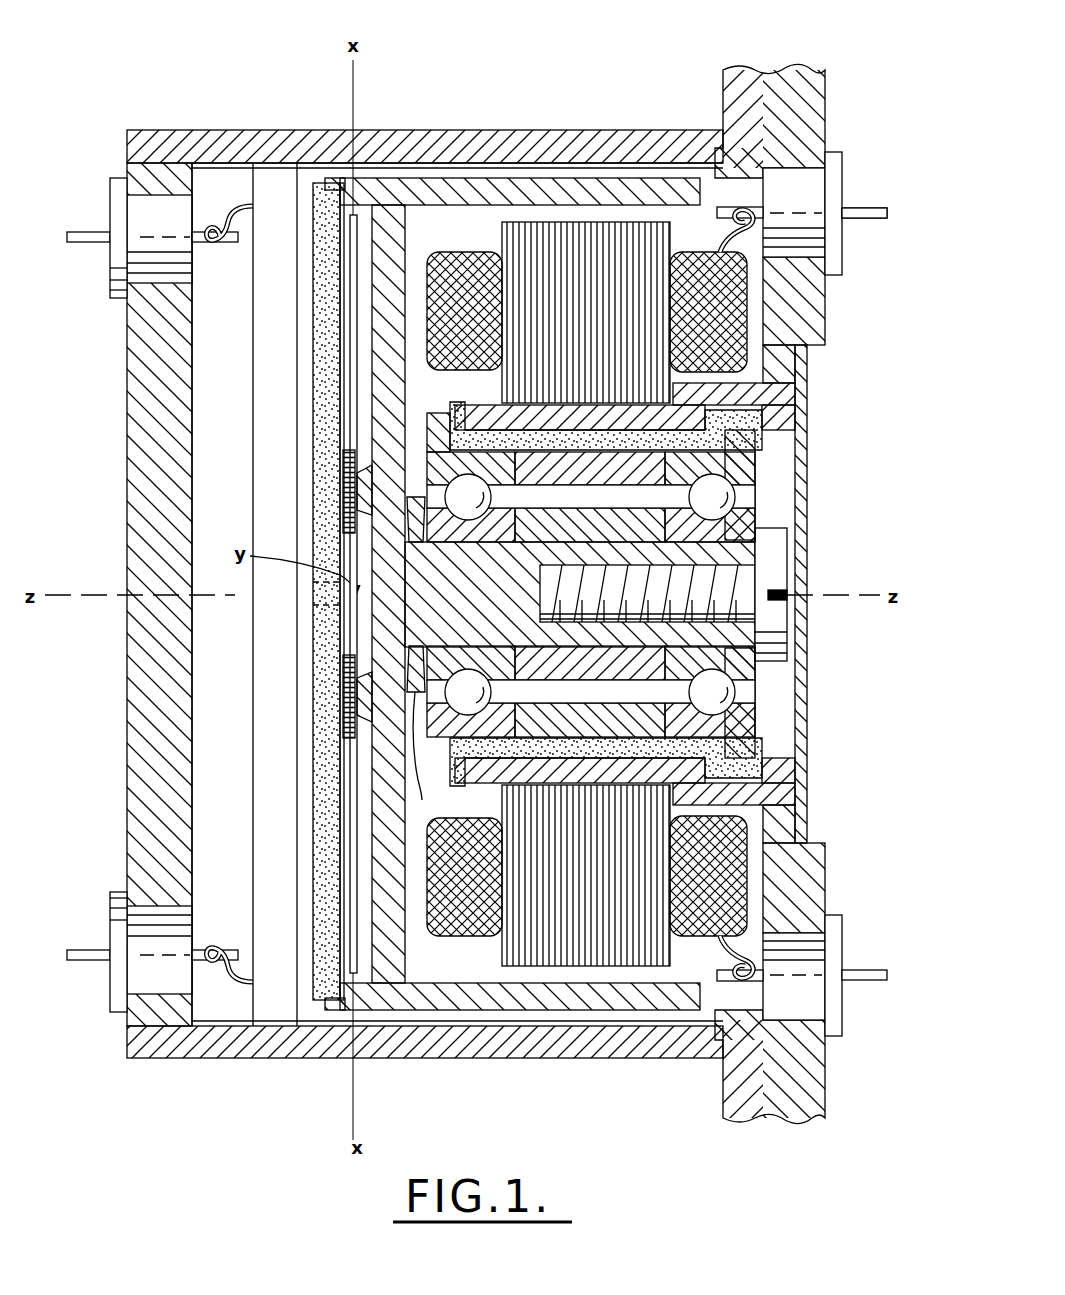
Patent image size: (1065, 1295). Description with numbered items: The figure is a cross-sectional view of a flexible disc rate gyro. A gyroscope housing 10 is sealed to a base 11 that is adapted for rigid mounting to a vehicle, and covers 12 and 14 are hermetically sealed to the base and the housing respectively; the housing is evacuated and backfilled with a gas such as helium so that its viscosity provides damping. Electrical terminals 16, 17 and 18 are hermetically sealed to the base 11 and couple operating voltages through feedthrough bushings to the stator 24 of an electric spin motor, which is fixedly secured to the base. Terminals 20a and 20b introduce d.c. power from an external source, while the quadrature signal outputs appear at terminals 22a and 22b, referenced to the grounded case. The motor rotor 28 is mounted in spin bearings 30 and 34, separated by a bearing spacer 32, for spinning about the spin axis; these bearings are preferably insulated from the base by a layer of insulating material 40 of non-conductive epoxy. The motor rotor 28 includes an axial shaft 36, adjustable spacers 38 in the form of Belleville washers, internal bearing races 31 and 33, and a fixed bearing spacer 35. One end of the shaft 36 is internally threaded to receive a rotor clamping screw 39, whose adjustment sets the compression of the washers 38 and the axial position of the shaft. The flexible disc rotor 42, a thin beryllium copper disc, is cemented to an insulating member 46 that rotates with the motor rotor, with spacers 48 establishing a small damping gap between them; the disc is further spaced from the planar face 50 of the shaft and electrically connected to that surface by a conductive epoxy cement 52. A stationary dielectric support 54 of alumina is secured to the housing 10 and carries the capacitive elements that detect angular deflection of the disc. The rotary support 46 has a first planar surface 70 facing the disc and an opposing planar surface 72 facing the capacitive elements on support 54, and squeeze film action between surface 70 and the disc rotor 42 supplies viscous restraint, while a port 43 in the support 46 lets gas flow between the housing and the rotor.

The gyroscope housing 10 is at (538, 130).
The base 11 is at (792, 68).
The cover 12 is at (808, 497).
The cover 14 is at (127, 398).
The electrical terminal 16 is at (870, 208).
The electrical terminal 17 is at (864, 213).
The electrical terminal 18 is at (862, 970).
The electrical terminal 20a is at (96, 930).
The electrical terminal 20b is at (88, 965).
The output terminal 22a is at (90, 232).
The output terminal 22b is at (90, 243).
The stator 24 is at (500, 240).
The motor rotor 28 is at (655, 178).
The spin bearing 30 is at (748, 465).
The internal bearing race 31 is at (738, 497).
The bearing spacer 32 is at (612, 470).
The internal bearing race 33 is at (512, 497).
The spin bearing 34 is at (435, 413).
The fixed bearing spacer 35 is at (610, 514).
The axial shaft 36 is at (372, 625).
The adjustable spacers 38 is at (430, 656).
The rotor clamping screw 39 is at (785, 570).
The layer of insulating material 40 is at (755, 762).
The flexible disc rotor 42 is at (348, 217).
The port 43 is at (320, 597).
The insulating member 46 is at (325, 478).
The spacers 48 is at (342, 528).
The planar face 50 is at (372, 783).
The conductive epoxy cement 52 is at (348, 718).
The stationary dielectric support 54 is at (252, 895).
The first planar surface 70 is at (342, 316).
The opposing planar surface 72 is at (312, 393).